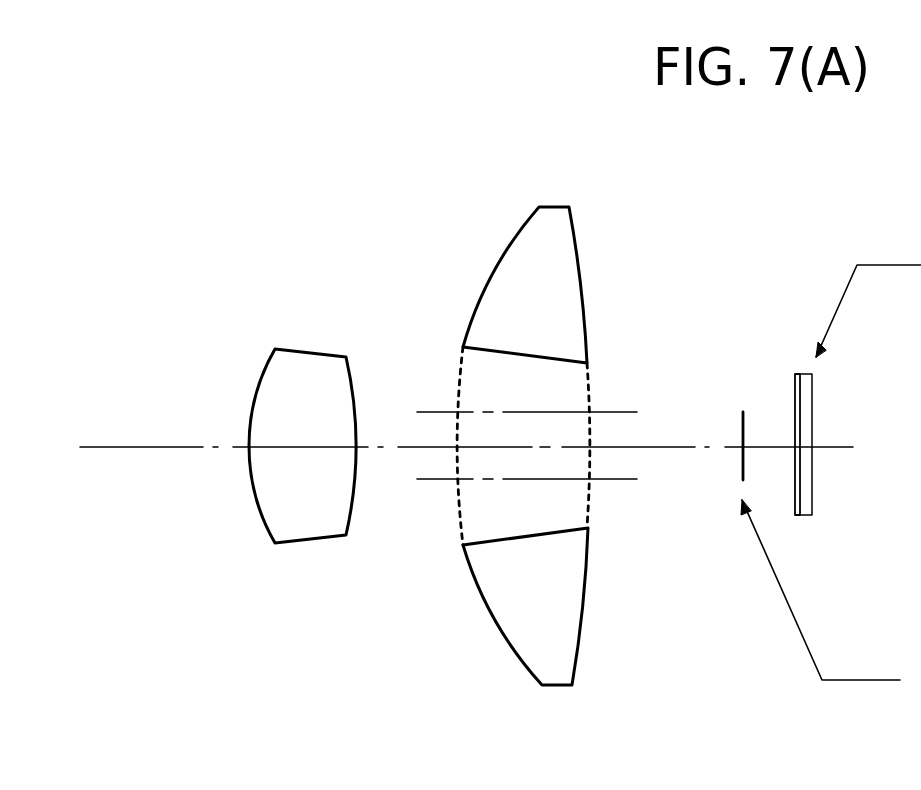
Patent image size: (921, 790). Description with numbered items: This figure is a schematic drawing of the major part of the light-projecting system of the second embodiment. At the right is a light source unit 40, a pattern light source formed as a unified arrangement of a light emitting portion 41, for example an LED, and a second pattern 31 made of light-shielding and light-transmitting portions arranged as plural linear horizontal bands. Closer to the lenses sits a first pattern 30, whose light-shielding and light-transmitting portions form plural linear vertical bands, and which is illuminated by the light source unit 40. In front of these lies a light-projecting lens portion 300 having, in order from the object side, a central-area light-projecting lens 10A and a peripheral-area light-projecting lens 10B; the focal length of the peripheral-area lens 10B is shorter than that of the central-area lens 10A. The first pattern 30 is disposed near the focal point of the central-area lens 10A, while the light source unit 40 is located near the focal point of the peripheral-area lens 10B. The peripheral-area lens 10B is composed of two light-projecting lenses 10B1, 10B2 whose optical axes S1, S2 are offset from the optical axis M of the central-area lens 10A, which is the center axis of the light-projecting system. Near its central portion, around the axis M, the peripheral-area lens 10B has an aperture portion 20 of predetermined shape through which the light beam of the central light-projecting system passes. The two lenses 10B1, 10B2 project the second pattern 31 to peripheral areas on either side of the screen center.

The light-projecting lens portion 300 is at (602, 148).
The central-area light-projecting lens 10A is at (303, 349).
The peripheral-area light-projecting lens 10B is at (550, 444).
The light-projecting lens 10B1 is at (490, 622).
The light-projecting lens 10B2 is at (560, 207).
The aperture portion 20 is at (575, 392).
The optical axis S1 is at (432, 483).
The optical axis S2 is at (432, 410).
The first pattern 30 is at (742, 468).
The second pattern 31 is at (795, 374).
The light source unit 40 is at (826, 440).
The light emitting portion 41 is at (807, 435).
The optical axis M is at (167, 448).